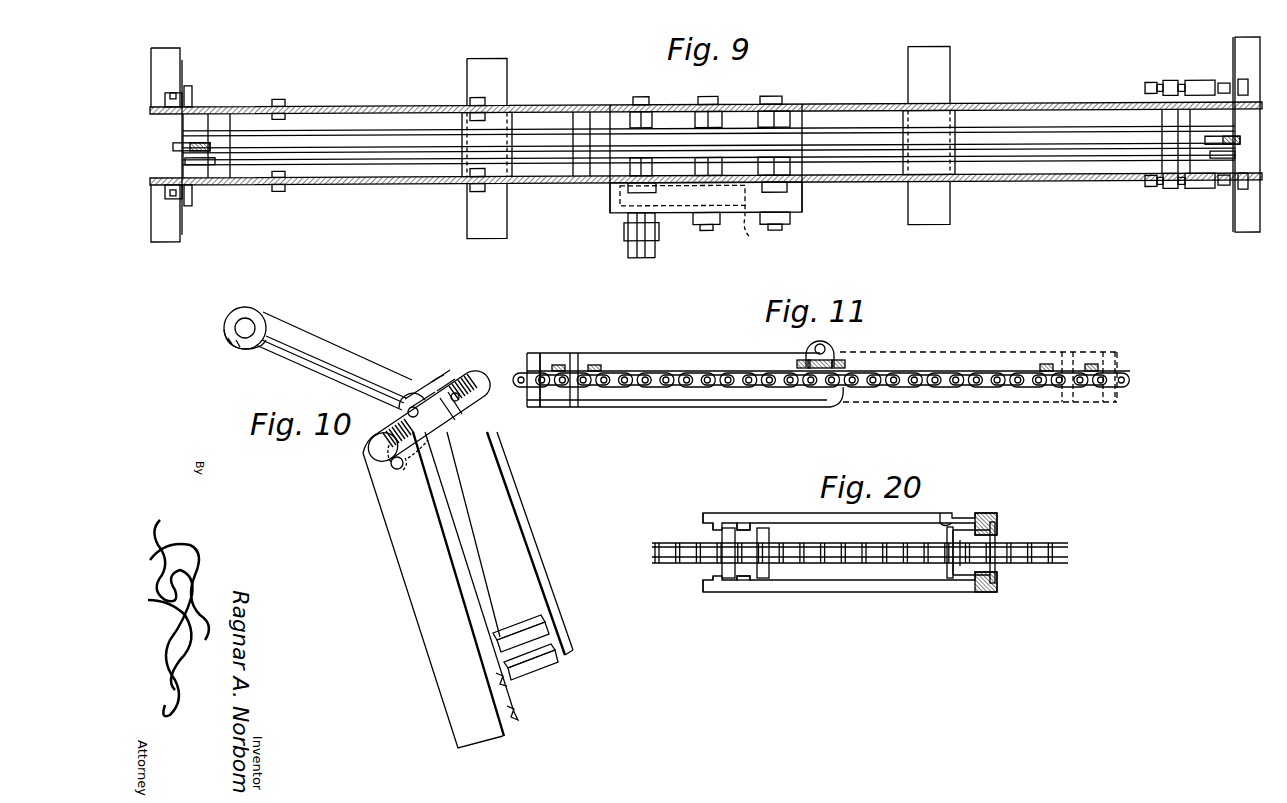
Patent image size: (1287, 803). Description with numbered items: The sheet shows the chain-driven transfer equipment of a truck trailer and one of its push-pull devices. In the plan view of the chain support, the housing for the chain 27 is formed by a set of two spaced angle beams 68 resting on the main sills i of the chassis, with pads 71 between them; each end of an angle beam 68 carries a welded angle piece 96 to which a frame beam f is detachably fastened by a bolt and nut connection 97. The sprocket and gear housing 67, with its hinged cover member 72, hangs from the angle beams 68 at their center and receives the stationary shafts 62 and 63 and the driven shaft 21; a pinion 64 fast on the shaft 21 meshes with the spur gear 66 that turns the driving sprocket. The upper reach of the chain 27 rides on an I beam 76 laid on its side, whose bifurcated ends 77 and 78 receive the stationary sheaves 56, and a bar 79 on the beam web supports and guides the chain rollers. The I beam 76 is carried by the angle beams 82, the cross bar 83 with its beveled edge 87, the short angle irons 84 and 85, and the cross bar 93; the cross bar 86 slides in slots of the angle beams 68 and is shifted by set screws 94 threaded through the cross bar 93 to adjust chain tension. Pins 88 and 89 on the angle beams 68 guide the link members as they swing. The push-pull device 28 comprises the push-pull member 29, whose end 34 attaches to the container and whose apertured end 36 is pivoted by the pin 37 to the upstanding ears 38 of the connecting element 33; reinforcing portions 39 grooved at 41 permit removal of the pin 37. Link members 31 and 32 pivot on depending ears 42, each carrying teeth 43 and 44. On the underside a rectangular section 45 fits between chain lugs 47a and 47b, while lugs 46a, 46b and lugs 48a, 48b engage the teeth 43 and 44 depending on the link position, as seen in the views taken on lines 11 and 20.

In FIG. 9, the frame beam f is at (180, 57).
In FIG. 9, the main sill i is at (507, 84).
In FIG. 9, the driven shaft 21 is at (655, 258).
In FIG. 9, the sheave 56 is at (173, 146).
In FIG. 9, the stationary shaft 62 is at (706, 233).
In FIG. 9, the stationary shaft 63 is at (782, 231).
In FIG. 9, the pinion 64 is at (618, 204).
In FIG. 9, the spur gear 66 is at (761, 227).
In FIG. 9, the sprocket and gear housing 67 is at (803, 122).
In FIG. 9, the angle beam 68 is at (1040, 106).
In FIG. 9, the pad 71 is at (507, 188).
In FIG. 9, the hinged cover member 72 is at (800, 215).
In FIG. 9, the I beam 76 is at (362, 166).
In FIG. 9, the end of I beam 77 is at (185, 161).
In FIG. 9, the end of I beam 78 is at (1235, 160).
In FIG. 9, the bar 79 is at (378, 146).
In FIG. 9, the angle beam 82 is at (985, 113).
In FIG. 9, the cross bar 83 is at (200, 120).
In FIG. 9, the angle iron section 84 is at (590, 122).
In FIG. 9, the angle iron section 85 is at (586, 178).
In FIG. 9, the cross bar 86 is at (1196, 95).
In FIG. 9, the beveled edge 87 is at (232, 125).
In FIG. 9, the pin 88 is at (285, 117).
In FIG. 9, the pin 89 is at (470, 118).
In FIG. 9, the cross bar 93 is at (1170, 85).
In FIG. 9, the set screw 94 is at (1145, 92).
In FIG. 9, the angle piece 96 is at (165, 100).
In FIG. 9, the bolt and nut connection 97 is at (186, 92).
In FIG. 20, the section line 11 is at (660, 561).
In FIG. 11, the section line 20 is at (560, 351).
In FIG. 11, the sprocket chain 27 is at (688, 370).
In FIG. 20, the sprocket chain 27 is at (1048, 547).
In FIG. 10, the push-pull device 28 is at (357, 452).
In FIG. 10, the push-pull member 29 is at (344, 362).
In FIG. 10, the link member 31 is at (522, 507).
In FIG. 11, the link member 31 is at (655, 360).
In FIG. 20, the link member 31 is at (727, 513).
In FIG. 10, the link member 32 is at (398, 540).
In FIG. 11, the link member 32 is at (822, 380).
In FIG. 20, the link member 32 is at (840, 592).
In FIG. 10, the connecting element 33 is at (447, 435).
In FIG. 11, the connecting element 33 is at (826, 358).
In FIG. 20, the connecting element 33 is at (958, 582).
In FIG. 10, the end of push-pull member 34 is at (262, 318).
In FIG. 10, the end of push-pull member 36 is at (420, 378).
In FIG. 10, the pin 37 is at (408, 410).
In FIG. 10, the upstanding ear 38 is at (412, 390).
In FIG. 11, the upstanding ear 38 is at (809, 354).
In FIG. 20, the upstanding ear 38 is at (947, 536).
In FIG. 10, the reinforcing portion 39 is at (462, 383).
In FIG. 20, the reinforcing portion 39 is at (997, 529).
In FIG. 10, the groove 41 is at (455, 378).
In FIG. 20, the groove 41 is at (983, 520).
In FIG. 10, the depending ear 42 is at (462, 420).
In FIG. 10, the tooth 43 is at (516, 627).
In FIG. 11, the tooth 43 is at (578, 402).
In FIG. 20, the tooth 43 is at (745, 522).
In FIG. 10, the tooth 44 is at (553, 670).
In FIG. 11, the tooth 44 is at (537, 402).
In FIG. 20, the tooth 44 is at (708, 520).
In FIG. 11, the rectangular section 45 is at (838, 358).
In FIG. 11, the chain lug 46a is at (1046, 364).
In FIG. 11, the chain lug 46b is at (1091, 364).
In FIG. 11, the chain lug 47a is at (797, 364).
In FIG. 20, the chain lug 47a is at (960, 515).
In FIG. 11, the chain lug 47b is at (845, 365).
In FIG. 20, the chain lug 47b is at (997, 574).
In FIG. 11, the chain lug 48a is at (557, 365).
In FIG. 20, the chain lug 48a is at (722, 537).
In FIG. 11, the chain lug 48b is at (595, 365).
In FIG. 20, the chain lug 48b is at (769, 537).